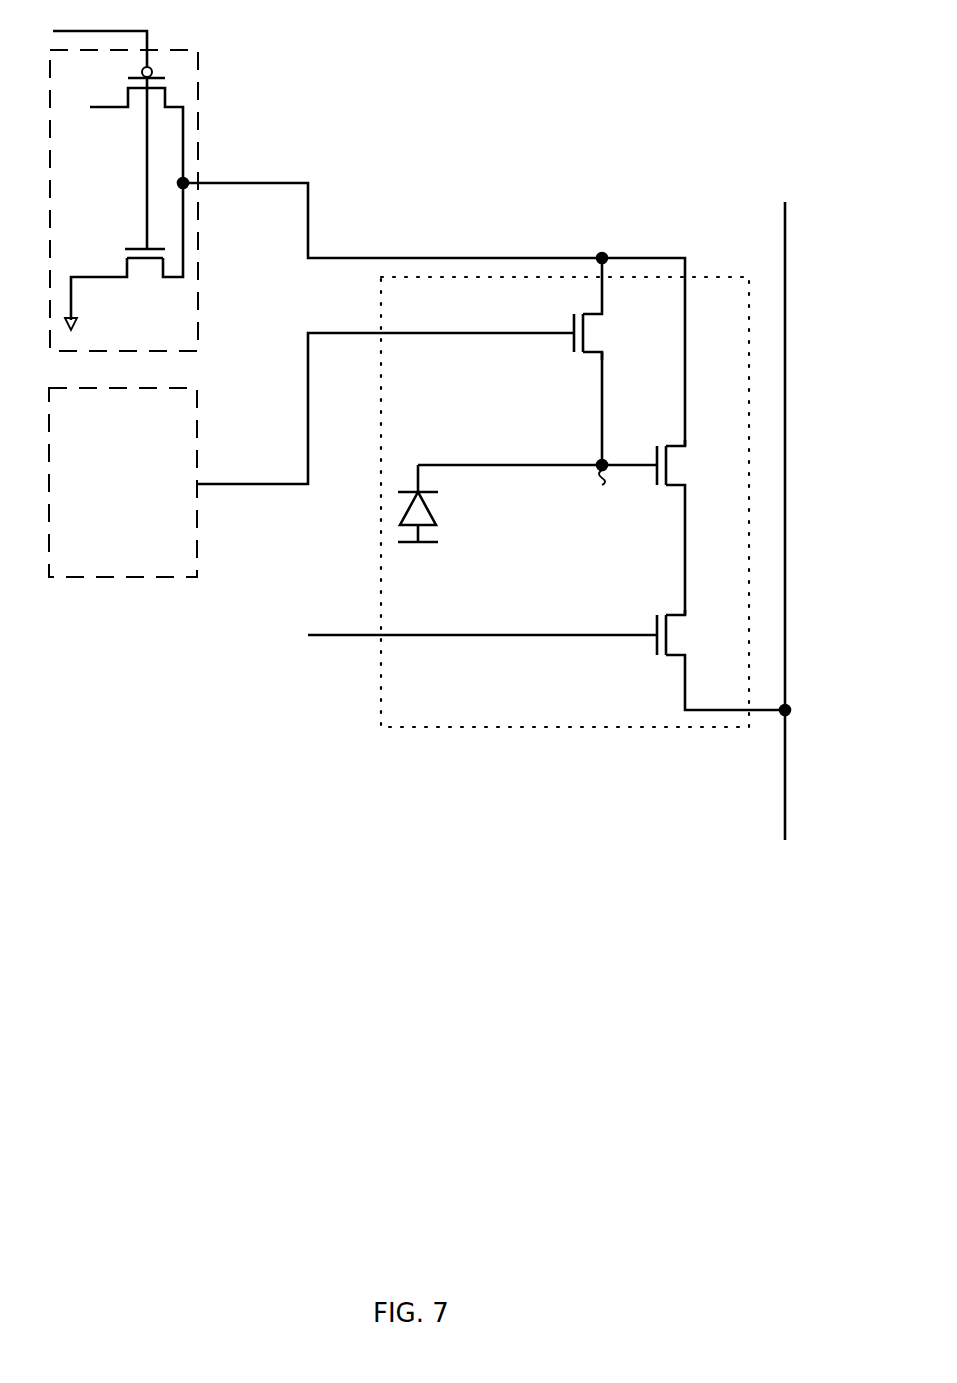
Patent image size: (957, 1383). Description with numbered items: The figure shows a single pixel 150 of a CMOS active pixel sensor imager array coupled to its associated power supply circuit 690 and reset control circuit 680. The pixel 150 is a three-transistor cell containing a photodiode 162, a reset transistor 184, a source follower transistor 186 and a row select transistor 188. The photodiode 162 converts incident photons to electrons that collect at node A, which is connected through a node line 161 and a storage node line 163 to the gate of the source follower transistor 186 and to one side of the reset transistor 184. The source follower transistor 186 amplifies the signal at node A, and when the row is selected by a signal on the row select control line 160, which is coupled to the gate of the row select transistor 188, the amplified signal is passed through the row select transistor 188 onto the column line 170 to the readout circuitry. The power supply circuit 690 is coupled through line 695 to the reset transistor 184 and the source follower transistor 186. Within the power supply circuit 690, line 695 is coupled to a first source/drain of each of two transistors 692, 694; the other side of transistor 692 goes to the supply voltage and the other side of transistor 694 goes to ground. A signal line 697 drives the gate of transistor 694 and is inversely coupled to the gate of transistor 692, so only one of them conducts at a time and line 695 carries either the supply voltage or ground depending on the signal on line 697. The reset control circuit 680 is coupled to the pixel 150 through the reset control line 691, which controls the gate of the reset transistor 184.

The signal line 697 is at (128, 31).
The power supply circuit 690 is at (218, 47).
The transistor 692 is at (140, 100).
The transistor 694 is at (153, 265).
The reset control circuit 680 is at (218, 387).
The line 695 is at (460, 258).
The reset control line 691 is at (405, 333).
The reset transistor 184 is at (588, 333).
The storage node line 163 is at (603, 418).
The photodiode connection line 161 is at (490, 465).
The photodiode 162 is at (437, 520).
The source follower transistor 186 is at (668, 465).
The row select control line 160 is at (546, 635).
The row select transistor 188 is at (668, 635).
The pixel 150 is at (438, 724).
The column line 170 is at (784, 222).